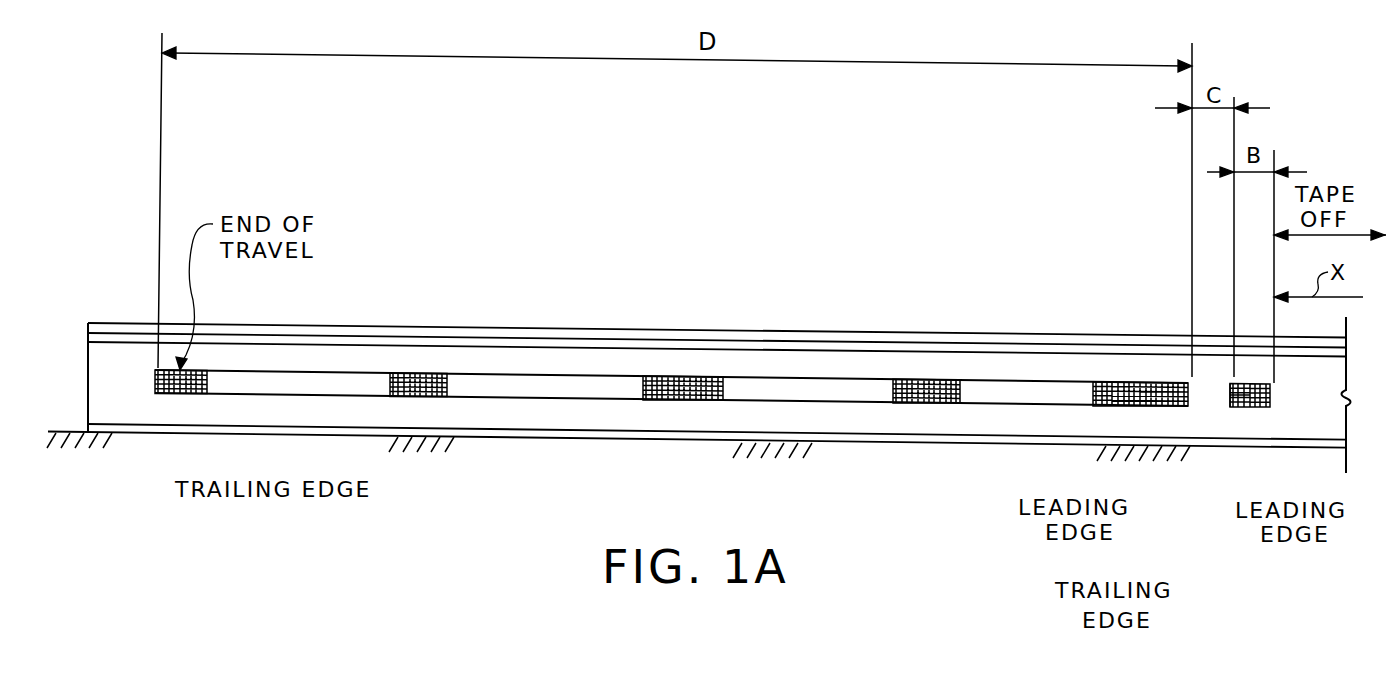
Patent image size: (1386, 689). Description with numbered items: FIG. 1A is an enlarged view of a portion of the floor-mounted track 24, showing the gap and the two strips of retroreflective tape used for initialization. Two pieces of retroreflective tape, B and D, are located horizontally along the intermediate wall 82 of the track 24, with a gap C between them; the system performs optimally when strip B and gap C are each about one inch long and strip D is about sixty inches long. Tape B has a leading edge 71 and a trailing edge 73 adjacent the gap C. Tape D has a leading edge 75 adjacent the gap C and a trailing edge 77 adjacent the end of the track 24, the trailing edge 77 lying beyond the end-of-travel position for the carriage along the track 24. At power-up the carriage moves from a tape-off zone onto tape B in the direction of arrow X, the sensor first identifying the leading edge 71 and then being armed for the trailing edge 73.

The floor-mounted track 24 is at (933, 458).
The intermediate wall 82 is at (602, 412).
The trailing edge 77 is at (155, 382).
The leading edge 75 is at (1190, 402).
The trailing edge 73 is at (1230, 400).
The leading edge 71 is at (1270, 400).